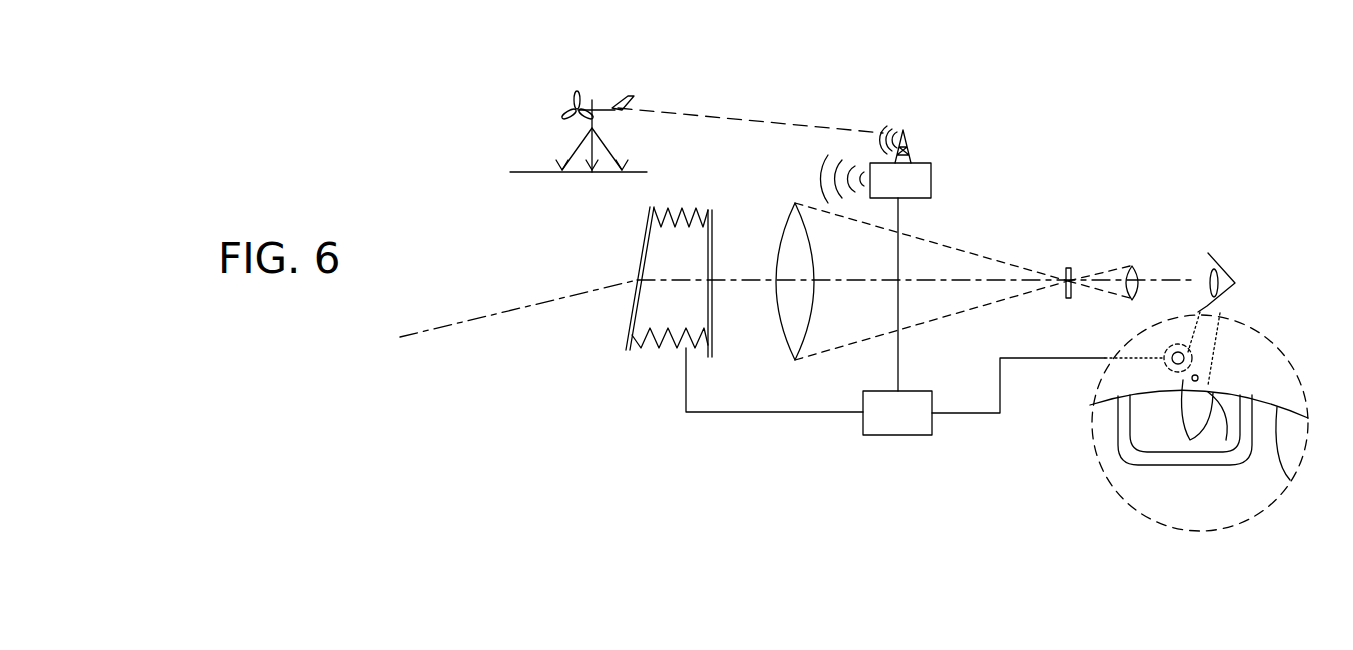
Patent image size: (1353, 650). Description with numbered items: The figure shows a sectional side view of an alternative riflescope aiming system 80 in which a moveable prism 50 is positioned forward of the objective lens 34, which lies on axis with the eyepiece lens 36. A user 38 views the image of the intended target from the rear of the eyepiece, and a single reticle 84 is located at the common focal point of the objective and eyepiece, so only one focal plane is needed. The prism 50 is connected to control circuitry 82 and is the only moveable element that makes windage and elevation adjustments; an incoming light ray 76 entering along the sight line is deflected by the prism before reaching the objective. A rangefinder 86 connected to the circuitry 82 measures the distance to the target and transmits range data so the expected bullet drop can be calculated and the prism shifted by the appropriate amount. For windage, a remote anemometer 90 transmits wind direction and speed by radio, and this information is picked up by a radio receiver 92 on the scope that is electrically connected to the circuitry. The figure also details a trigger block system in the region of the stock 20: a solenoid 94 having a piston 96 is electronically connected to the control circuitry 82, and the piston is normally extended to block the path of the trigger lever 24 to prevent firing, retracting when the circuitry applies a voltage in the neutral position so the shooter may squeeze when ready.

The stock 20 is at (1290, 480).
The trigger lever 24 is at (1207, 430).
The objective lens 34 is at (780, 247).
The eyepiece lens 36 is at (1134, 266).
The user 38 is at (1226, 252).
The prism 50 is at (657, 362).
The incoming light ray 76 is at (472, 320).
The riflescope aiming system 80 is at (1122, 143).
The control circuitry 82 is at (883, 437).
The reticle 84 is at (1068, 265).
The rangefinder 86 is at (932, 178).
The remote anemometer 90 is at (602, 80).
The radio receiver 92 is at (906, 140).
The solenoid 94 is at (1160, 368).
The piston 96 is at (1177, 367).